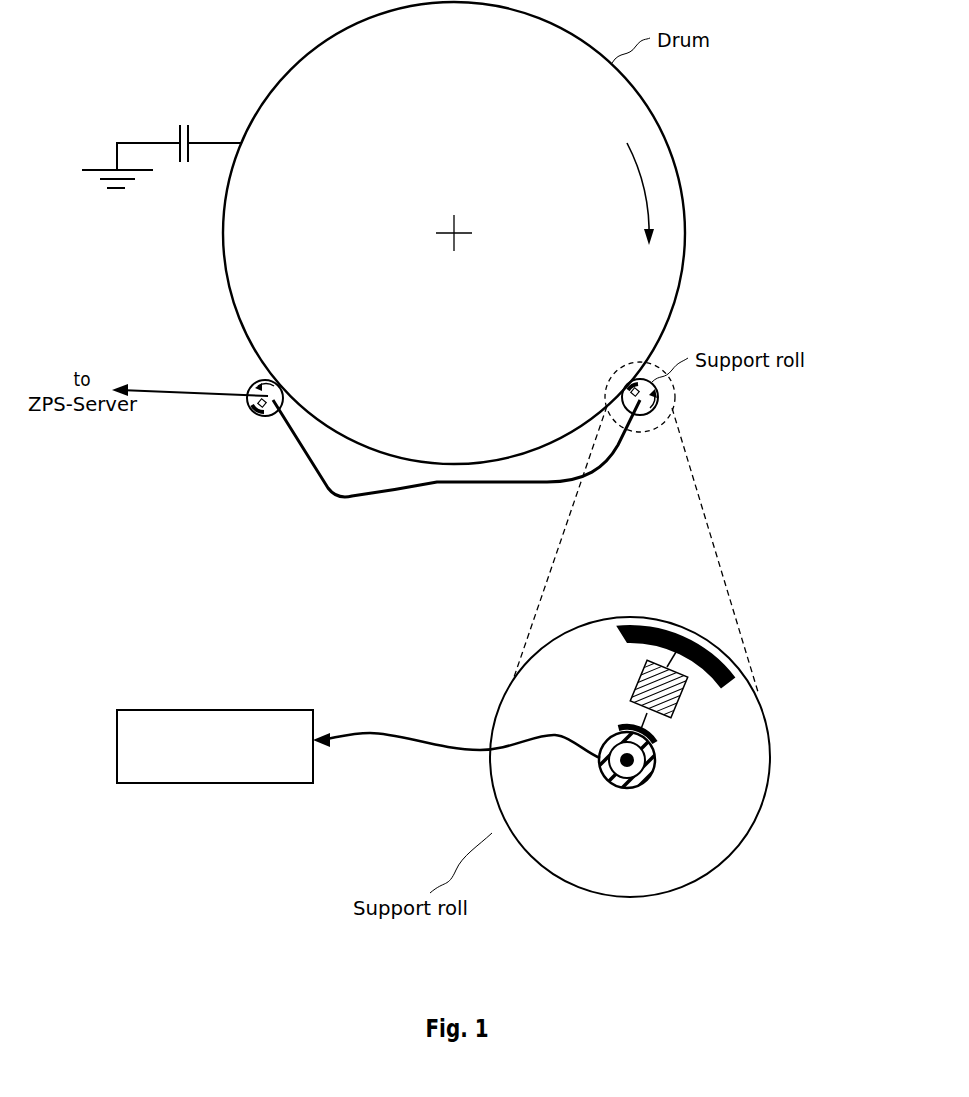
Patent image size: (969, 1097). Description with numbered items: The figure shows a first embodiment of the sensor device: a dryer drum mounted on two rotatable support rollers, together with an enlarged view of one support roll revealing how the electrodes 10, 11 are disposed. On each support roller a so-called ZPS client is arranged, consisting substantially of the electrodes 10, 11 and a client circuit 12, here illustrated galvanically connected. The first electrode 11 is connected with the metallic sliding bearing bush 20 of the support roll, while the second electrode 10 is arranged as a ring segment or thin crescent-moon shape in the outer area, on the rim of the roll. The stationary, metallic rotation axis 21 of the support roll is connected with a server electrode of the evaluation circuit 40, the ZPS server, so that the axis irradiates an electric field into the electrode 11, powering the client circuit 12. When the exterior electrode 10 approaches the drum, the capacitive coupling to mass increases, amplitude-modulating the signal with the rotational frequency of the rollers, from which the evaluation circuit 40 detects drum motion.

The second electrode 10 is at (732, 662).
The first electrode 11 is at (655, 740).
The client circuit 12 is at (633, 688).
The sliding bearing bush 20 is at (613, 783).
The rotation axis 21 is at (633, 767).
The evaluation circuit (ZPS-Server) 40 is at (293, 703).